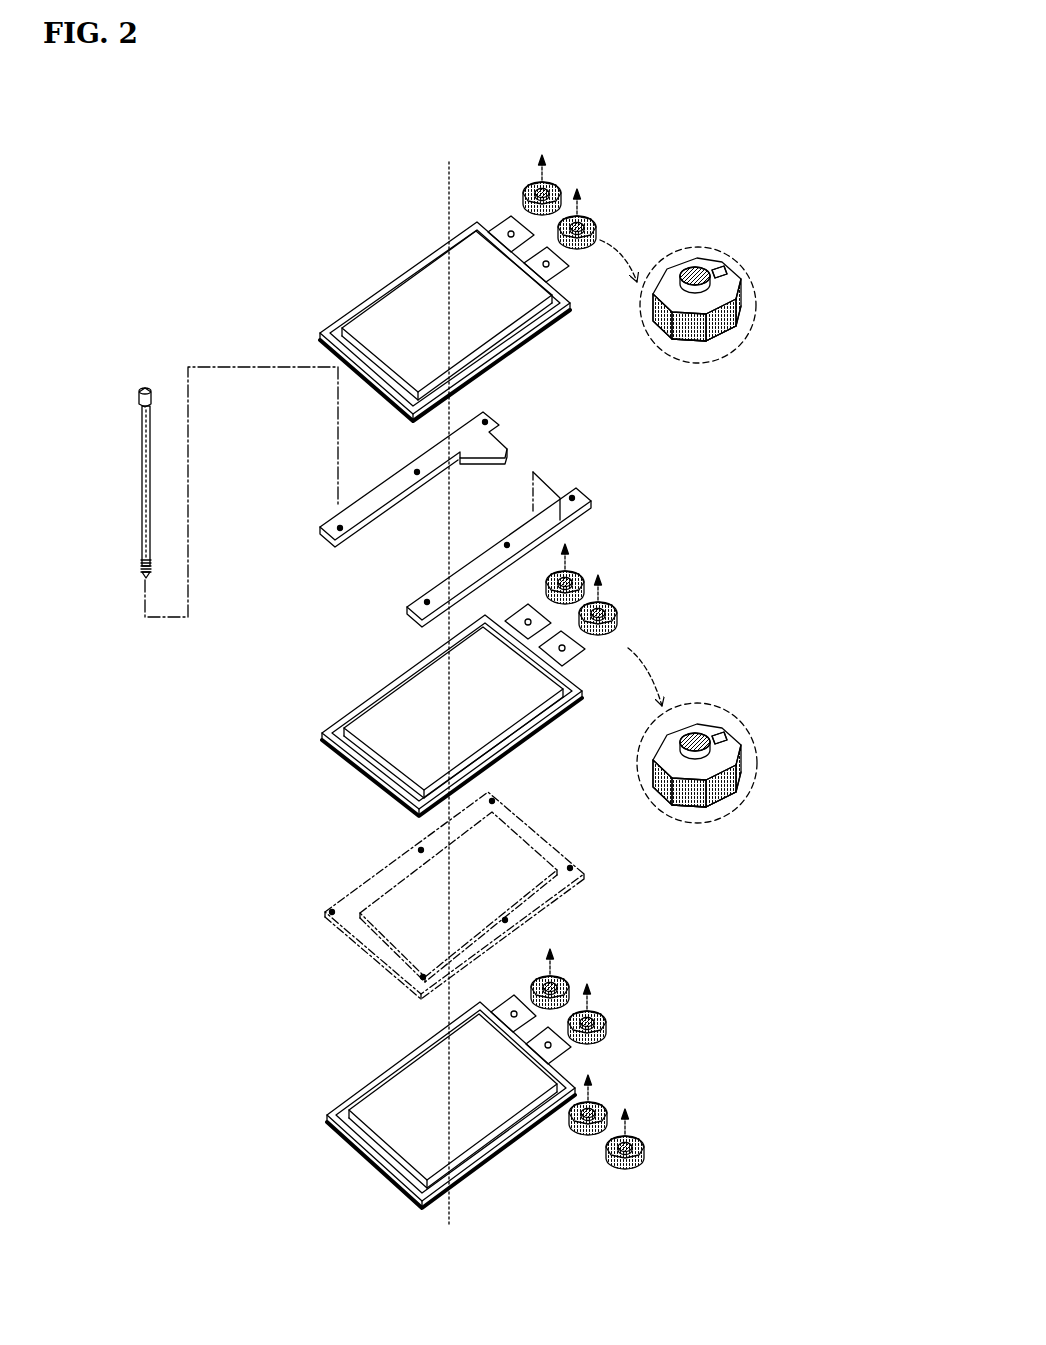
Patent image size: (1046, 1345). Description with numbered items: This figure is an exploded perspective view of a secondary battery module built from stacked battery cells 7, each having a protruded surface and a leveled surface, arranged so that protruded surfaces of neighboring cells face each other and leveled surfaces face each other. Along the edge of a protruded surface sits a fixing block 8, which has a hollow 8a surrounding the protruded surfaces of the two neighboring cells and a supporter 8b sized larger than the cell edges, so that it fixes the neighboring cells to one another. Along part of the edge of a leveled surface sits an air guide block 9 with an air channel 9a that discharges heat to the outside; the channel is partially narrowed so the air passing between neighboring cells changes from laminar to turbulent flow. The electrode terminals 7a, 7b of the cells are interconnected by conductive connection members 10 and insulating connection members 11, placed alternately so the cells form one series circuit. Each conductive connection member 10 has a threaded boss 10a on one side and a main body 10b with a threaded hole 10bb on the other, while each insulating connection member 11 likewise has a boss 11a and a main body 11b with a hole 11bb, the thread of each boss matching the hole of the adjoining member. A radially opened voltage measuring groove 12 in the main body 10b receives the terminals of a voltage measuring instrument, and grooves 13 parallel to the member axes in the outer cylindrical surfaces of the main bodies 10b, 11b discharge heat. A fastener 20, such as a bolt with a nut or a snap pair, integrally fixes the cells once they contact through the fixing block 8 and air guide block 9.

The battery cell 7 is at (404, 283).
The electrode terminal 7a is at (503, 219).
The electrode terminal 7b is at (565, 280).
The fixing block 8 is at (451, 882).
The hollow 8a is at (396, 924).
The supporter 8b is at (534, 832).
The air guide block 9 is at (449, 525).
The air channel 9a is at (430, 537).
The conductive connection member 10 is at (691, 642).
The boss 10a is at (692, 738).
The main body 10b is at (722, 795).
The hole 10bb is at (742, 778).
The insulating connection member 11 is at (703, 638).
The boss 11a is at (694, 272).
The main body 11b is at (720, 334).
The hole 11bb is at (740, 318).
The voltage measuring groove 12 is at (724, 270).
The grooves 13 is at (705, 342).
The fasteners 20 is at (142, 503).